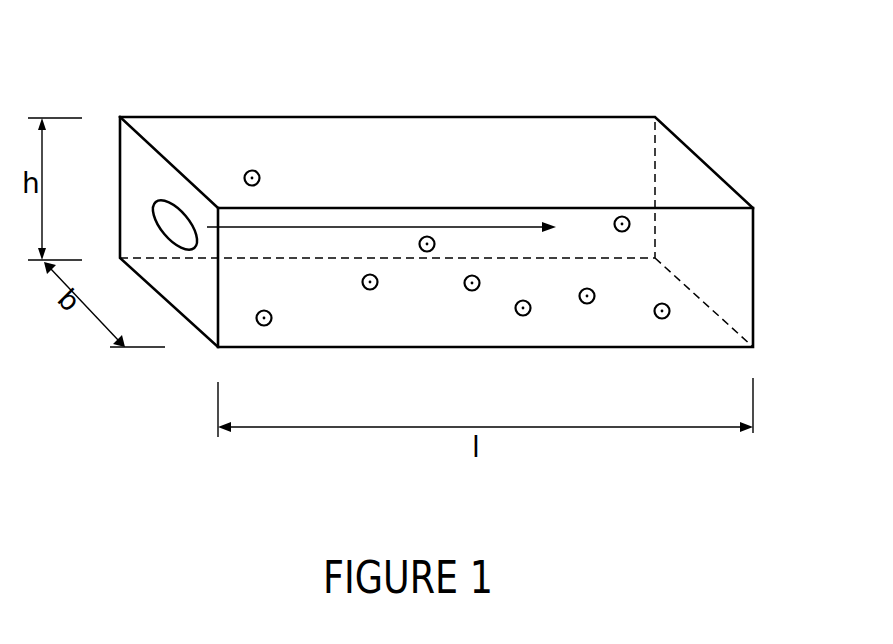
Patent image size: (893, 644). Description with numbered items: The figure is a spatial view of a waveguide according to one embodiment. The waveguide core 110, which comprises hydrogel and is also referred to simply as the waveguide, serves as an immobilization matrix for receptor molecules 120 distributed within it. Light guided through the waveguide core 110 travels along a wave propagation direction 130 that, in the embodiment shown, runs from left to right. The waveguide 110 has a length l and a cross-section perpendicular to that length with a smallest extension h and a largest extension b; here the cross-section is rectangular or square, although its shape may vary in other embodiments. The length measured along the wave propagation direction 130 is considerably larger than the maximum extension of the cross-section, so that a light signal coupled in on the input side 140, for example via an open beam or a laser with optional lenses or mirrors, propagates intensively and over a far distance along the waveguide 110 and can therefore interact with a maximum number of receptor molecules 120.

The waveguide core 110 is at (553, 123).
The receptor molecules 120 is at (668, 304).
The wave propagation direction 130 is at (347, 228).
The input side 140 is at (167, 210).